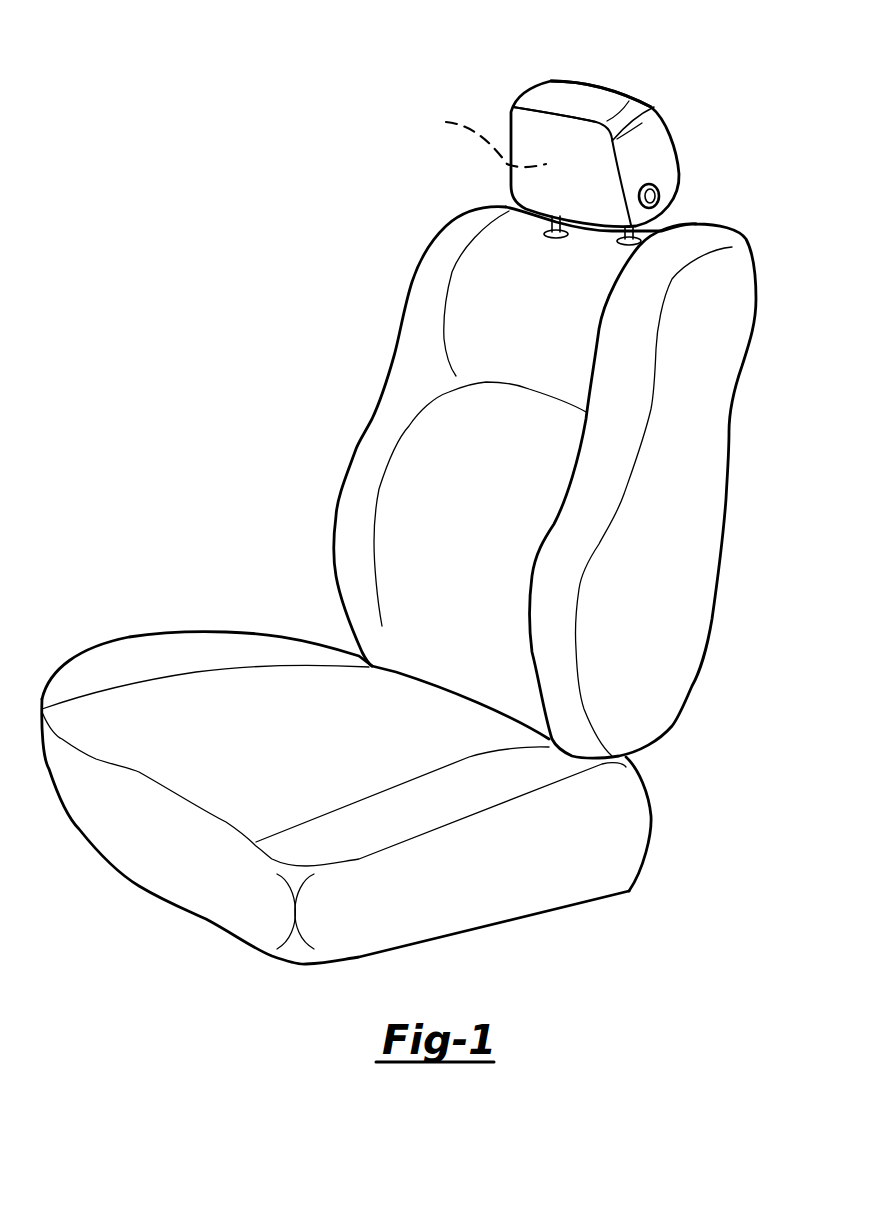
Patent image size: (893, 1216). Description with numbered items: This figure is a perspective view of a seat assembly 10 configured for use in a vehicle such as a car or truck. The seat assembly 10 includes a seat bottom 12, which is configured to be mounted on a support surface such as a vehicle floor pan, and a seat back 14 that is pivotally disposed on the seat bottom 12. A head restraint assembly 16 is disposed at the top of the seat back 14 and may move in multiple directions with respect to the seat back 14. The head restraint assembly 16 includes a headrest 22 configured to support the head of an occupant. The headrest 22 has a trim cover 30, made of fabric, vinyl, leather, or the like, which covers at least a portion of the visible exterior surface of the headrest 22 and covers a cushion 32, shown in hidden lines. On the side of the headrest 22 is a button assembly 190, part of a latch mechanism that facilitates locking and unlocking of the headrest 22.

The seat assembly 10 is at (427, 219).
The seat bottom 12 is at (227, 633).
The seat back 14 is at (412, 290).
The head restraint assembly 16 is at (656, 108).
The headrest 22 is at (592, 86).
The trim cover 30 is at (552, 130).
The cushion 32 is at (483, 135).
The button assembly 190 is at (664, 193).